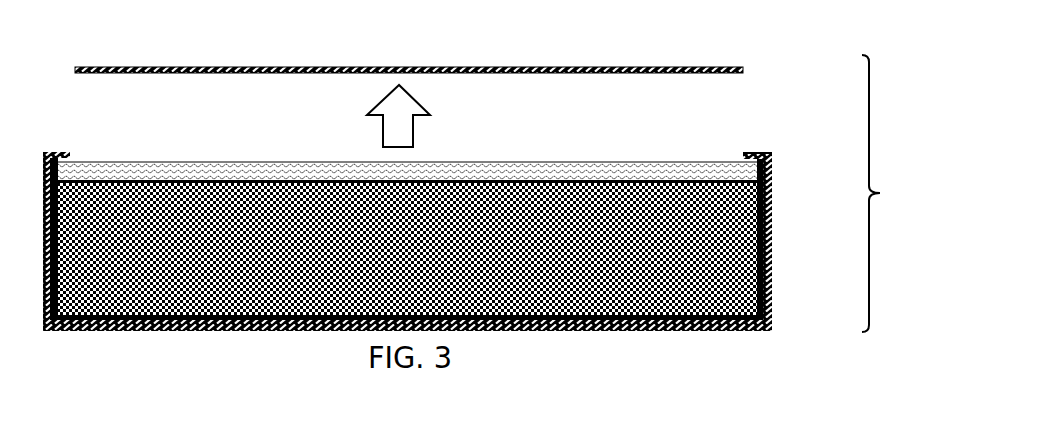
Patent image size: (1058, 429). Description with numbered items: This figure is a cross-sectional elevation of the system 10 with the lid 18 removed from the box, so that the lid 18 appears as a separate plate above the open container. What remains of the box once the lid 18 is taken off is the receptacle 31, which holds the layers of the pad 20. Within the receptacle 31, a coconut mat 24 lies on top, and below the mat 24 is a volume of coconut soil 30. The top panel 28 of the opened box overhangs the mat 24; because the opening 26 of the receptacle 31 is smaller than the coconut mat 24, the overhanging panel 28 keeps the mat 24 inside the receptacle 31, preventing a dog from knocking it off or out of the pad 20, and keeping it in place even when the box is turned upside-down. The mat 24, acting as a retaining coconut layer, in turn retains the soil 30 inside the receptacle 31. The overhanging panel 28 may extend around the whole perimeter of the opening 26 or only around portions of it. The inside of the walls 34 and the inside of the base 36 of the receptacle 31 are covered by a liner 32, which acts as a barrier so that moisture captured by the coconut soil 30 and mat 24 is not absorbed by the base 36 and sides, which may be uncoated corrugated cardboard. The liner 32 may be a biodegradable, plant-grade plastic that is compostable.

The system 10 is at (886, 193).
The lid 18 is at (303, 68).
The pad 20 is at (441, 231).
The coconut mat 24 is at (650, 162).
The opening 26 is at (747, 158).
The top panel 28 is at (750, 153).
The coconut soil 30 is at (557, 182).
The receptacle 31 is at (772, 222).
The liner 32 is at (58, 200).
The walls 34 is at (772, 272).
The base 36 is at (728, 331).